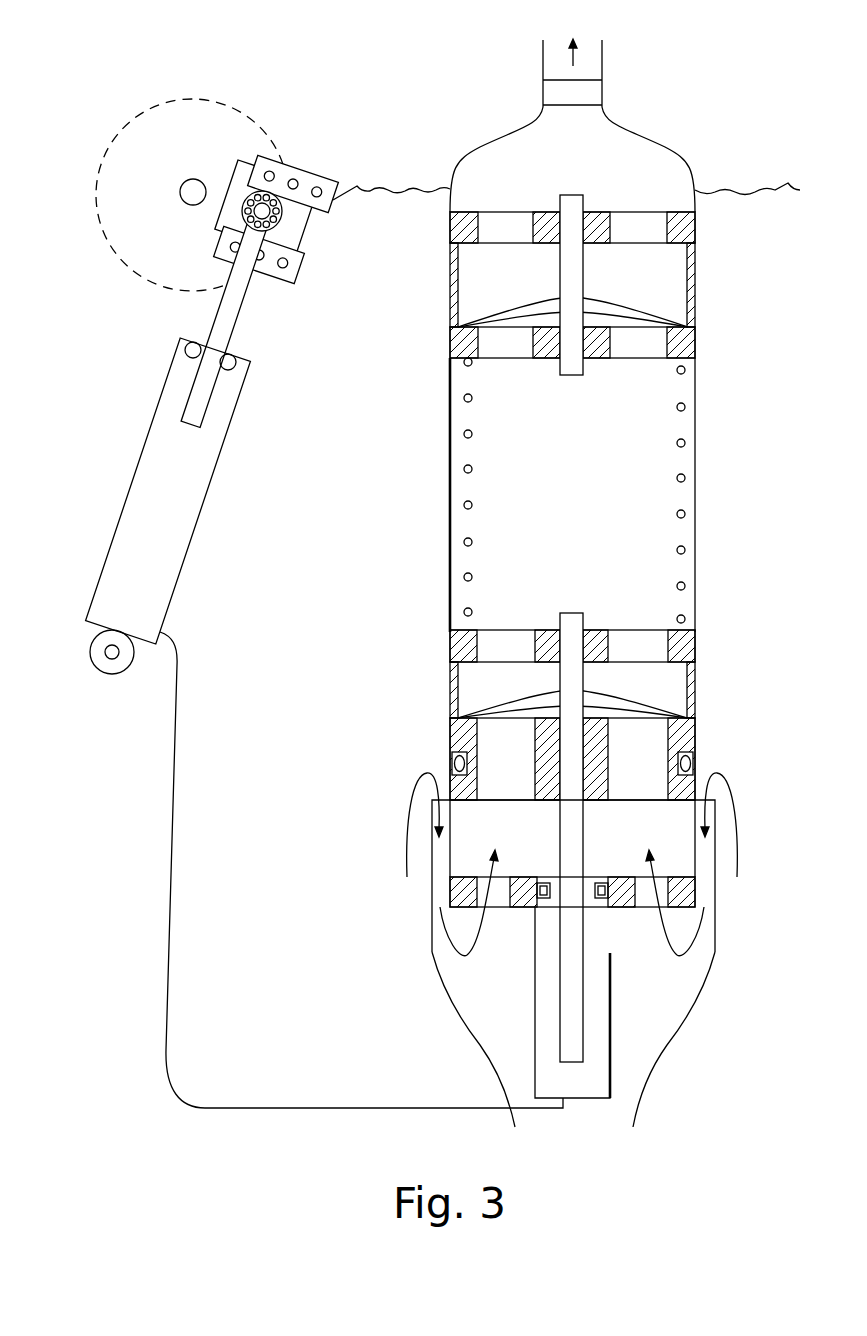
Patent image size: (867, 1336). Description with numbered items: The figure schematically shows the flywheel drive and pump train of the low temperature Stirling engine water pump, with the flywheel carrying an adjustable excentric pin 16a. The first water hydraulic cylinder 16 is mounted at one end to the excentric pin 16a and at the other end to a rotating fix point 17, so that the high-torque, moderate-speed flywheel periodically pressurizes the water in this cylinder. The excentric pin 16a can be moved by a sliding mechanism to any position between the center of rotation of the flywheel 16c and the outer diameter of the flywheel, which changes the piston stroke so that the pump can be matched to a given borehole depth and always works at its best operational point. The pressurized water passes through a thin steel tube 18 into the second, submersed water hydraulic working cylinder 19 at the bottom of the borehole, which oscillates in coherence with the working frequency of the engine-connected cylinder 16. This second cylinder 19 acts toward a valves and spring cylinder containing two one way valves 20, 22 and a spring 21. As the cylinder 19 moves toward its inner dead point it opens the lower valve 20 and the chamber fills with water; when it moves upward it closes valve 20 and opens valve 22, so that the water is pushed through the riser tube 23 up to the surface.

The first water hydraulic cylinder 16 is at (207, 503).
The excentric pin 16a is at (286, 217).
The center of rotation of the flywheel 16c is at (305, 190).
The rotating fix point 17 is at (94, 663).
The thin steel tube 18 is at (175, 741).
The second water hydraulic working cylinder 19 is at (576, 1033).
The one way valve 20 is at (507, 702).
The spring 21 is at (491, 483).
The one way valve 22 is at (540, 300).
The riser tube 23 is at (494, 976).